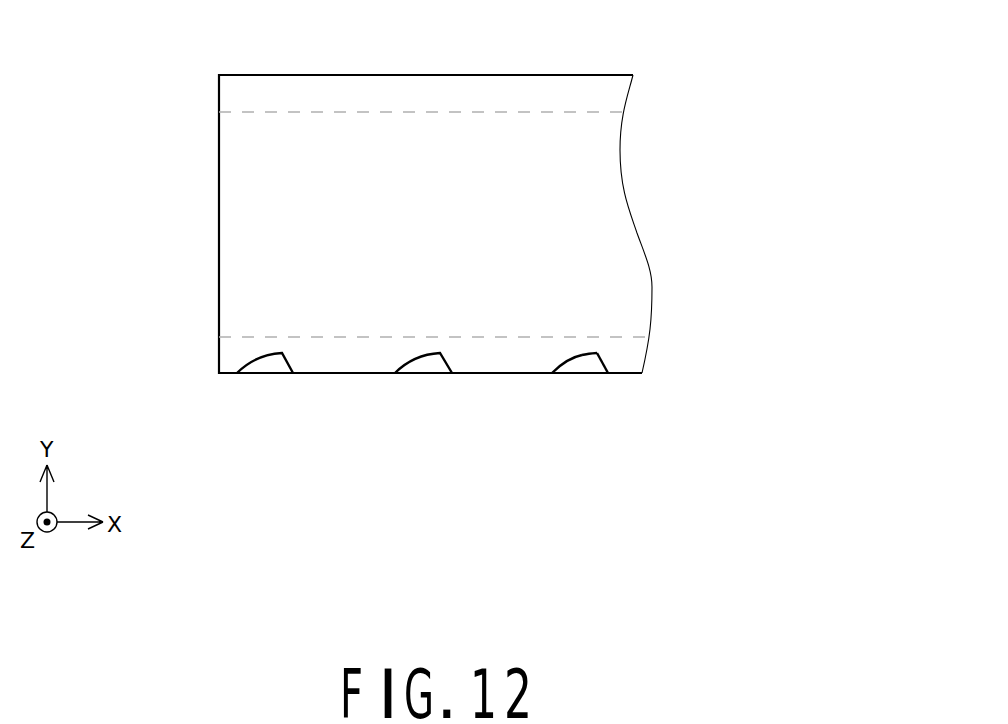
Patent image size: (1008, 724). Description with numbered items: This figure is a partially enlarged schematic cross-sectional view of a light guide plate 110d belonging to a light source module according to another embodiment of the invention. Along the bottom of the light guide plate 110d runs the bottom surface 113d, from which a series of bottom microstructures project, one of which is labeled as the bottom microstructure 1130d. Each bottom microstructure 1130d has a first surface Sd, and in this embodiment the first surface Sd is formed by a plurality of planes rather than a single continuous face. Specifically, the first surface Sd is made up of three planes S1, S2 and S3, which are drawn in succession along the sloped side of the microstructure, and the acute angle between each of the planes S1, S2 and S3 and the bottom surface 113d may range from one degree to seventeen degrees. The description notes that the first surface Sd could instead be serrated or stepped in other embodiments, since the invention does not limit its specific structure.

The light guide plate 110d is at (170, 37).
The bottom surface 113d is at (497, 365).
The bottom microstructure 1130d is at (283, 362).
The plane S1 is at (562, 368).
The plane S2 is at (582, 359).
The plane S3 is at (593, 357).
The first surface Sd is at (605, 438).